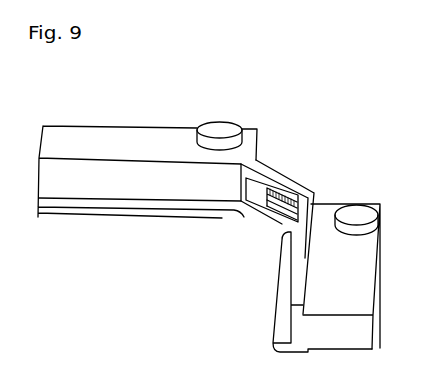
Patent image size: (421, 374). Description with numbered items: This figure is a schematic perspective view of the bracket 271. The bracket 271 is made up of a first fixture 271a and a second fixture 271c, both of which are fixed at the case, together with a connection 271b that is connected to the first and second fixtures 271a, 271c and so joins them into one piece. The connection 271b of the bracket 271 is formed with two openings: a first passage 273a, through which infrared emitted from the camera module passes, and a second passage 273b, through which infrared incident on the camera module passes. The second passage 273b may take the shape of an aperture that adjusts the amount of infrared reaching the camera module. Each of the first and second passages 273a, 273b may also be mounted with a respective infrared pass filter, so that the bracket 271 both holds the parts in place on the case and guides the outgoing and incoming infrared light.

The bracket 271 is at (308, 97).
The first fixture 271a is at (183, 131).
The connection 271b is at (276, 177).
The second fixture 271c is at (323, 218).
The first passage 273a is at (272, 194).
The second passage 273b is at (289, 206).